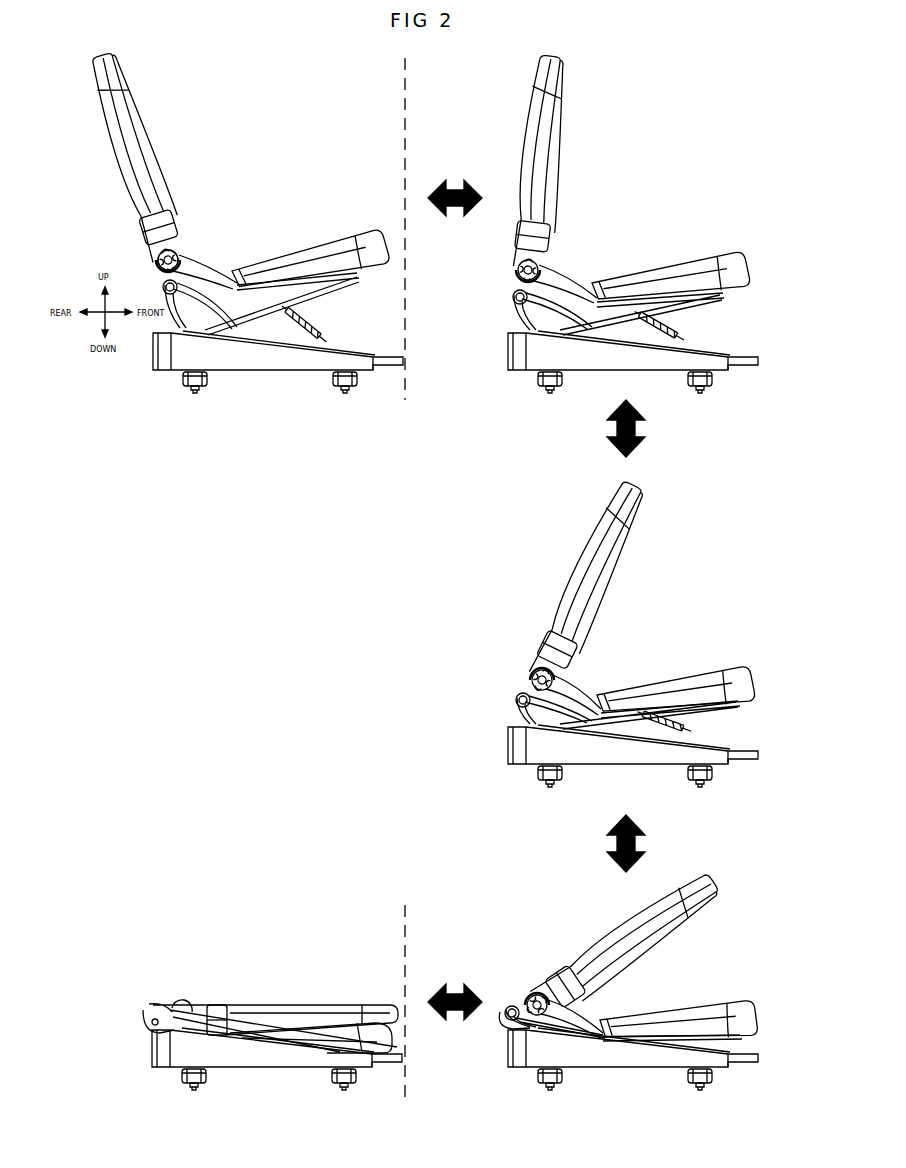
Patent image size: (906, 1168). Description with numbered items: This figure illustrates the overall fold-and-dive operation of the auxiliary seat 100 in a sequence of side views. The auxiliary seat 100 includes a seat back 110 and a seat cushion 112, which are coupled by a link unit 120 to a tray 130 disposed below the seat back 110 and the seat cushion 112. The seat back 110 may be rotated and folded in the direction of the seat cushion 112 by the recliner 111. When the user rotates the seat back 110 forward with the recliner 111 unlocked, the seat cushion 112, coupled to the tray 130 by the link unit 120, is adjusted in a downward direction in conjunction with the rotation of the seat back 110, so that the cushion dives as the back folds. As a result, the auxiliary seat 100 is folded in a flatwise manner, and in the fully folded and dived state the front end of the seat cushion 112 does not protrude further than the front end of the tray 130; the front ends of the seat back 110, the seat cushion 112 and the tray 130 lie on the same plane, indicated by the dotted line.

The auxiliary seat 100 is at (140, 110).
The seat back 110 is at (135, 157).
The recliner 111 is at (172, 252).
The seat cushion 112 is at (297, 257).
The link unit 120 is at (267, 317).
The tray 130 is at (187, 353).